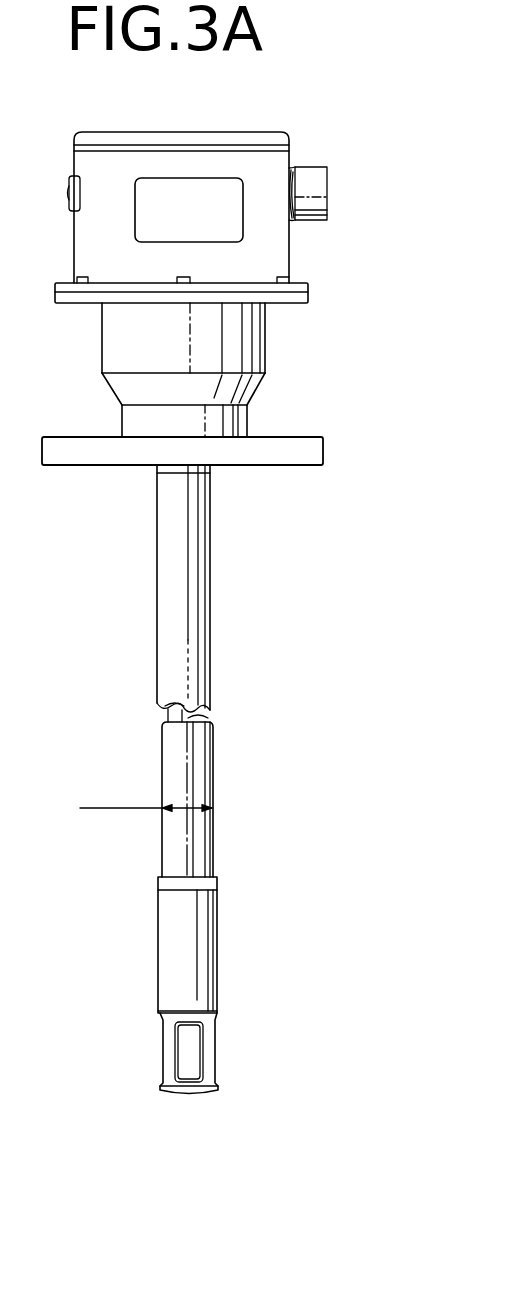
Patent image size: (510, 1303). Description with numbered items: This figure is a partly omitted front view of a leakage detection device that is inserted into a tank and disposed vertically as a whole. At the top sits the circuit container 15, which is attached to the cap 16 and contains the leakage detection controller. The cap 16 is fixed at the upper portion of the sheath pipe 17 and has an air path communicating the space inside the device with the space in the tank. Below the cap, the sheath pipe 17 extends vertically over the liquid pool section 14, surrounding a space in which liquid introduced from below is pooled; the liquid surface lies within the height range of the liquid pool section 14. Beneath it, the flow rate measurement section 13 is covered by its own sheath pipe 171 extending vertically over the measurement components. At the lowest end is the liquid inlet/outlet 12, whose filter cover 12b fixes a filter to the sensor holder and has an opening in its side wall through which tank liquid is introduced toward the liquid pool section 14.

The circuit container 15 is at (270, 132).
The cap 16 is at (113, 347).
The sheath pipe 17 is at (157, 591).
The liquid pool section 14 is at (179, 671).
The sheath pipe 171 is at (165, 938).
The flow rate measurement section 13 is at (236, 883).
The liquid inlet/outlet 12 is at (189, 1055).
The filter cover 12b is at (170, 1053).